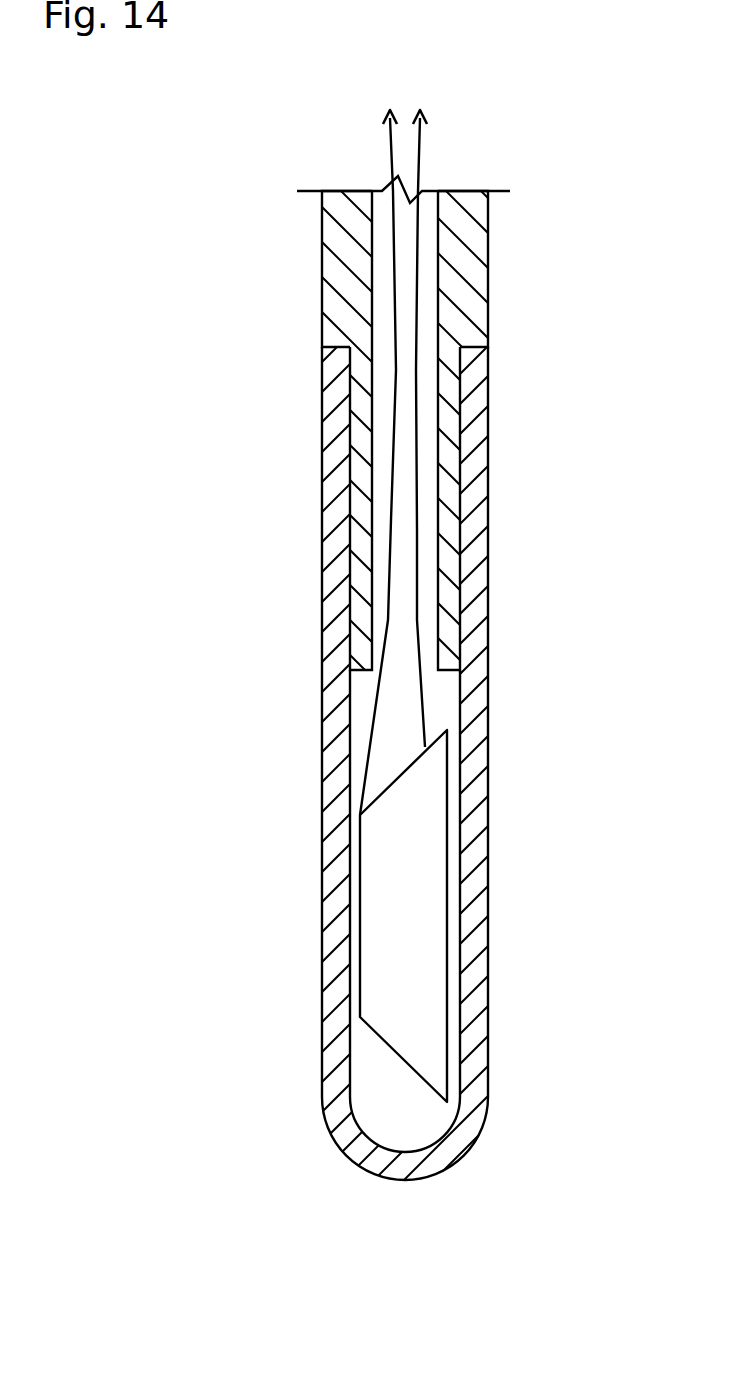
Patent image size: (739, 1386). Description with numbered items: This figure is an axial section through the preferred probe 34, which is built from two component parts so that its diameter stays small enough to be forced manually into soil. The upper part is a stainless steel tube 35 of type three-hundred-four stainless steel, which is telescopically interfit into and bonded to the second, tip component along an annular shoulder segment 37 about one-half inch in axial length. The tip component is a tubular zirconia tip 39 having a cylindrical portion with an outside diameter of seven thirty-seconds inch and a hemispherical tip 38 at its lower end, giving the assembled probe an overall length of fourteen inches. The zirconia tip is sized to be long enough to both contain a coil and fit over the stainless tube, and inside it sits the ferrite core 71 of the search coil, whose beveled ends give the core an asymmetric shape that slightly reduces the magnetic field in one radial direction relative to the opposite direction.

The probe 34 is at (568, 412).
The stainless steel tube 35 is at (488, 300).
The annular shoulder segment 37 is at (463, 562).
The closed tip of protective tube 38 is at (400, 1167).
The zirconia tip 39 is at (486, 915).
The ferrite core 71 is at (432, 780).